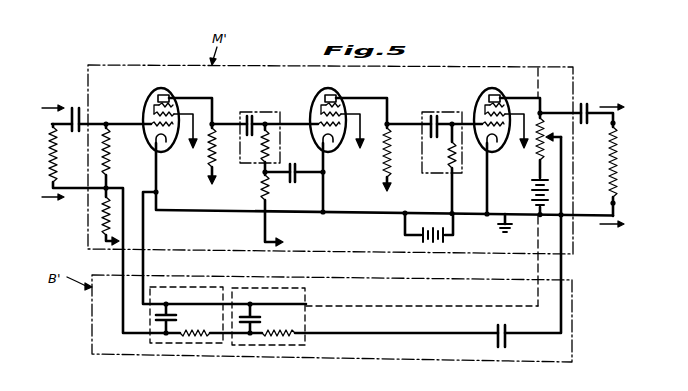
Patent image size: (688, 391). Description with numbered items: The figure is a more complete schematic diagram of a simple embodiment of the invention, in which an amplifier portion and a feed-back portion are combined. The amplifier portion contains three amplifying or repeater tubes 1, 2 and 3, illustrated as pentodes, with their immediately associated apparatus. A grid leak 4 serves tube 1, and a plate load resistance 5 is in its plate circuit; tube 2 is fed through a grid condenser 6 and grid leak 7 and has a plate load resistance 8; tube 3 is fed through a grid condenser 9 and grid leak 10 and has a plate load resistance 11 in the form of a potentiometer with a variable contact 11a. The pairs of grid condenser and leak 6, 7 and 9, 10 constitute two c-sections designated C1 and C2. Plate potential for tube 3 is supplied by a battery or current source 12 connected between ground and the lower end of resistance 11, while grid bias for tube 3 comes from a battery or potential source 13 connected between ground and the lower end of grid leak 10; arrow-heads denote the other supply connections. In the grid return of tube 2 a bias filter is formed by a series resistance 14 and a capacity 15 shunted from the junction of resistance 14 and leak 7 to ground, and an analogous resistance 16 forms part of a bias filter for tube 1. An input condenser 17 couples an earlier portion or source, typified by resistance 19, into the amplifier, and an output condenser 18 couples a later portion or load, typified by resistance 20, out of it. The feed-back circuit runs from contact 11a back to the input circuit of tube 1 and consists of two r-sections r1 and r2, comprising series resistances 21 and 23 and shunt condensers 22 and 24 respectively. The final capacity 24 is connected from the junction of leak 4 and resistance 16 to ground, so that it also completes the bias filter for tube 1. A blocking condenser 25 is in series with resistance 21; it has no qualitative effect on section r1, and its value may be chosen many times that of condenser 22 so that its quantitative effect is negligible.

The amplifying tube 1 is at (162, 89).
The amplifying tube 2 is at (329, 92).
The amplifying tube 3 is at (492, 91).
The grid leak 4 is at (110, 143).
The plate load resistance 5 is at (208, 156).
The grid condenser 6 is at (254, 118).
The grid leak 7 is at (263, 150).
The plate load resistance 8 is at (382, 158).
The grid condenser 9 is at (437, 118).
The grid leak 10 is at (449, 158).
The plate load resistance 11 is at (537, 138).
The variable contact 11a is at (549, 133).
The battery or current source 12 is at (532, 194).
The battery or potential source 13 is at (433, 246).
The series resistance 14 is at (261, 190).
The capacity 15 is at (294, 184).
The resistance 16 is at (103, 222).
The input condenser 17 is at (77, 106).
The output condenser 18 is at (585, 104).
The resistance 19 is at (50, 153).
The resistance 20 is at (618, 155).
The series resistance 21 is at (296, 331).
The shunt condenser 22 is at (262, 320).
The series resistance 23 is at (198, 340).
The shunt condenser 24 is at (176, 319).
The blocking condenser 25 is at (506, 346).
The c-section C1 is at (247, 112).
The c-section C2 is at (423, 112).
The r-section r1 is at (312, 346).
The r-section r2 is at (222, 347).